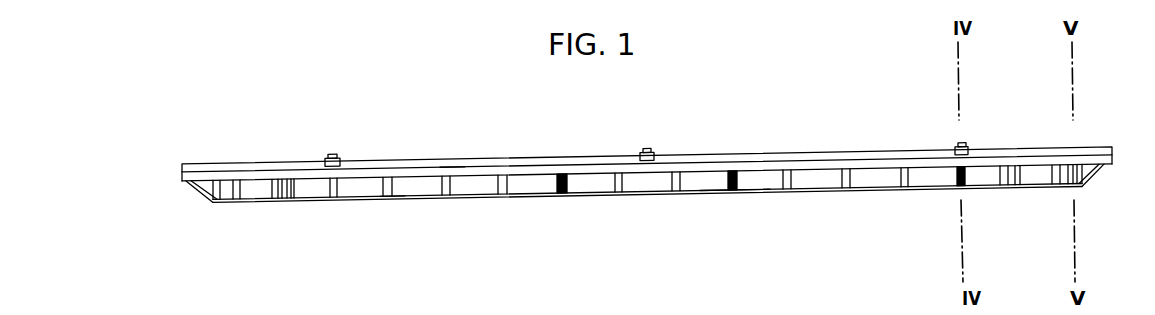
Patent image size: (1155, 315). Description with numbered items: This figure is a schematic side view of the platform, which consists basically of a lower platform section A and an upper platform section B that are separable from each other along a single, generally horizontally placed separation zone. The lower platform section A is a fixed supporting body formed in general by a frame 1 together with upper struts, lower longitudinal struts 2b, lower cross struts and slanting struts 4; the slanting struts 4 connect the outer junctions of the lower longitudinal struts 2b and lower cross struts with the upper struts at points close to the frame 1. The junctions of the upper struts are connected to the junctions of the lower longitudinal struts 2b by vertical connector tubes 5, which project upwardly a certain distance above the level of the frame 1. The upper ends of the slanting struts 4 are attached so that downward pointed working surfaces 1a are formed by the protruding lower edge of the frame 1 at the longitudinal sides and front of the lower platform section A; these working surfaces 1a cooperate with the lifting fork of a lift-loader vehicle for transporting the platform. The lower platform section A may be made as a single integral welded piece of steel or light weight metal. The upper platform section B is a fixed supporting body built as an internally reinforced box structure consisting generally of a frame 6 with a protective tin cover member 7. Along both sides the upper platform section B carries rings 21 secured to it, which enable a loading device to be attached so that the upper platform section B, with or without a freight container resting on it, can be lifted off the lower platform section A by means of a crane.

The frame 1 is at (531, 175).
The working surface 1a is at (188, 183).
The lower longitudinal strut 2b is at (760, 188).
The slanting strut 4 is at (202, 193).
The vertical connector tube 5 is at (844, 178).
The frame 6 is at (252, 165).
The protective tin cover member 7 is at (513, 159).
The ring 21 is at (333, 159).
The lower platform section A is at (392, 190).
The upper platform section B is at (452, 162).